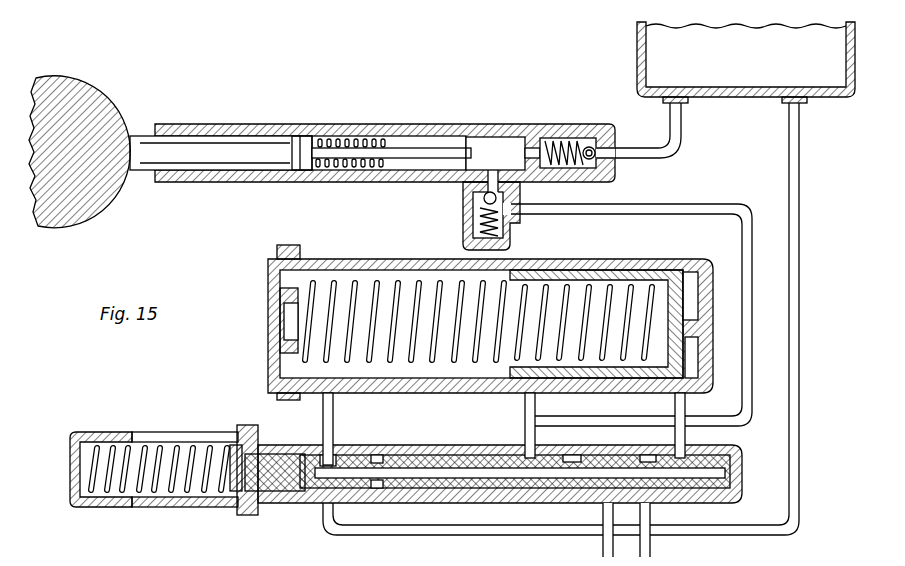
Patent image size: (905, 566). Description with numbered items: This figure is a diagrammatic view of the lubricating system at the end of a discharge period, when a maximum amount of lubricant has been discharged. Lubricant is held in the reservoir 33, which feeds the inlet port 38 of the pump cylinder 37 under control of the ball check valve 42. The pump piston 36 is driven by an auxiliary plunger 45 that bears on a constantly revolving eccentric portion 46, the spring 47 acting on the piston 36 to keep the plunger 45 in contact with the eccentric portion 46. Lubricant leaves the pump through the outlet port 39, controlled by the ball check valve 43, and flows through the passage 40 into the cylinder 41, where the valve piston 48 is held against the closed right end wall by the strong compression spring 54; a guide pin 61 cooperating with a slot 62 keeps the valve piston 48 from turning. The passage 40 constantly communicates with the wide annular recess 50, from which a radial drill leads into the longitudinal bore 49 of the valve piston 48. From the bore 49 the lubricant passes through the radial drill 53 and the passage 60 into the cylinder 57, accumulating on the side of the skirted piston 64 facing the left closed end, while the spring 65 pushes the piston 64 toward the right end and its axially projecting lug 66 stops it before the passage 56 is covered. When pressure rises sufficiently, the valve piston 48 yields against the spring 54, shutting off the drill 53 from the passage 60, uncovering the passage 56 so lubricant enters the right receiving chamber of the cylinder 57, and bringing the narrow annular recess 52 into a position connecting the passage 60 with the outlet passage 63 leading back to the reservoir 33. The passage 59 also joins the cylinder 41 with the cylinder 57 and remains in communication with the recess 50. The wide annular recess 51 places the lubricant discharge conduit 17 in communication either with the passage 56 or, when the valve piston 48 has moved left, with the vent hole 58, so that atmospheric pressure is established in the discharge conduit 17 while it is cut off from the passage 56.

The lubricant discharge conduit 17 is at (652, 552).
The reservoir 33 is at (729, 60).
The piston 36 is at (480, 136).
The pump cylinder 37 is at (515, 136).
The inlet port 38 is at (620, 160).
The outlet port 39 is at (495, 153).
The passage 40 is at (703, 206).
The cylinder 41 is at (464, 449).
The ball check valve 42 is at (589, 146).
The ball check valve 43 is at (473, 207).
The auxiliary plunger 45 is at (135, 133).
The eccentric portion 46 is at (94, 96).
The spring 47 is at (326, 139).
The valve piston 48 is at (424, 456).
The longitudinal bore 49 is at (490, 479).
The annular recess 50 is at (572, 457).
The annular recess 51 is at (648, 456).
The annular recess 52 is at (376, 457).
The radial drill 53 is at (320, 458).
The compression spring 54 is at (160, 497).
The passage 56 is at (686, 415).
The cylinder 57 is at (700, 296).
The vent hole 58 is at (605, 552).
The passage 59 is at (536, 412).
The passage 60 is at (334, 418).
The guide pin 61 is at (236, 442).
The slot 62 is at (166, 432).
The outlet passage 63 is at (420, 535).
The skirted piston 64 is at (676, 290).
The spring 65 is at (335, 285).
The lug 66 is at (700, 338).